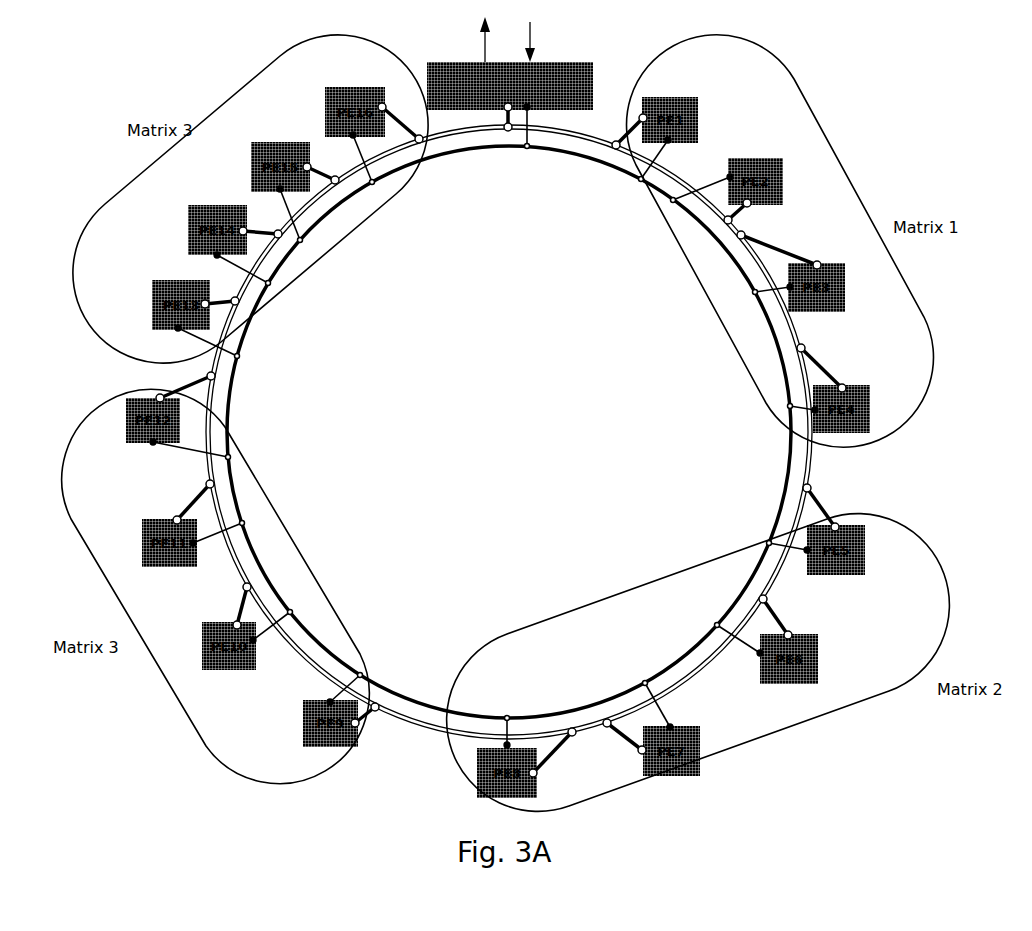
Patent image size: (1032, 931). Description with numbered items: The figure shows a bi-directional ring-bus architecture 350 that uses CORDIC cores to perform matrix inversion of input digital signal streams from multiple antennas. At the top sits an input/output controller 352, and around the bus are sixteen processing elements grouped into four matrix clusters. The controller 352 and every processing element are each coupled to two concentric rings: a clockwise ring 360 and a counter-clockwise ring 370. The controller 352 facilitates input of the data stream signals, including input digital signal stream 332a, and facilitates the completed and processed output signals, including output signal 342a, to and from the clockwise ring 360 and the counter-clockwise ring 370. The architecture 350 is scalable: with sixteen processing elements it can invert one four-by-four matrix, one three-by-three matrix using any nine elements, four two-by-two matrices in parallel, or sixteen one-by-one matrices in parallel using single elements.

The bi-directional ring-bus architecture 350 is at (944, 110).
The input/output (I/O) controller 352 is at (590, 81).
The clockwise ring 360 is at (585, 138).
The counter-clockwise ring 370 is at (553, 152).
The output signal 342a is at (380, 37).
The input digital signal stream 332a is at (647, 39).